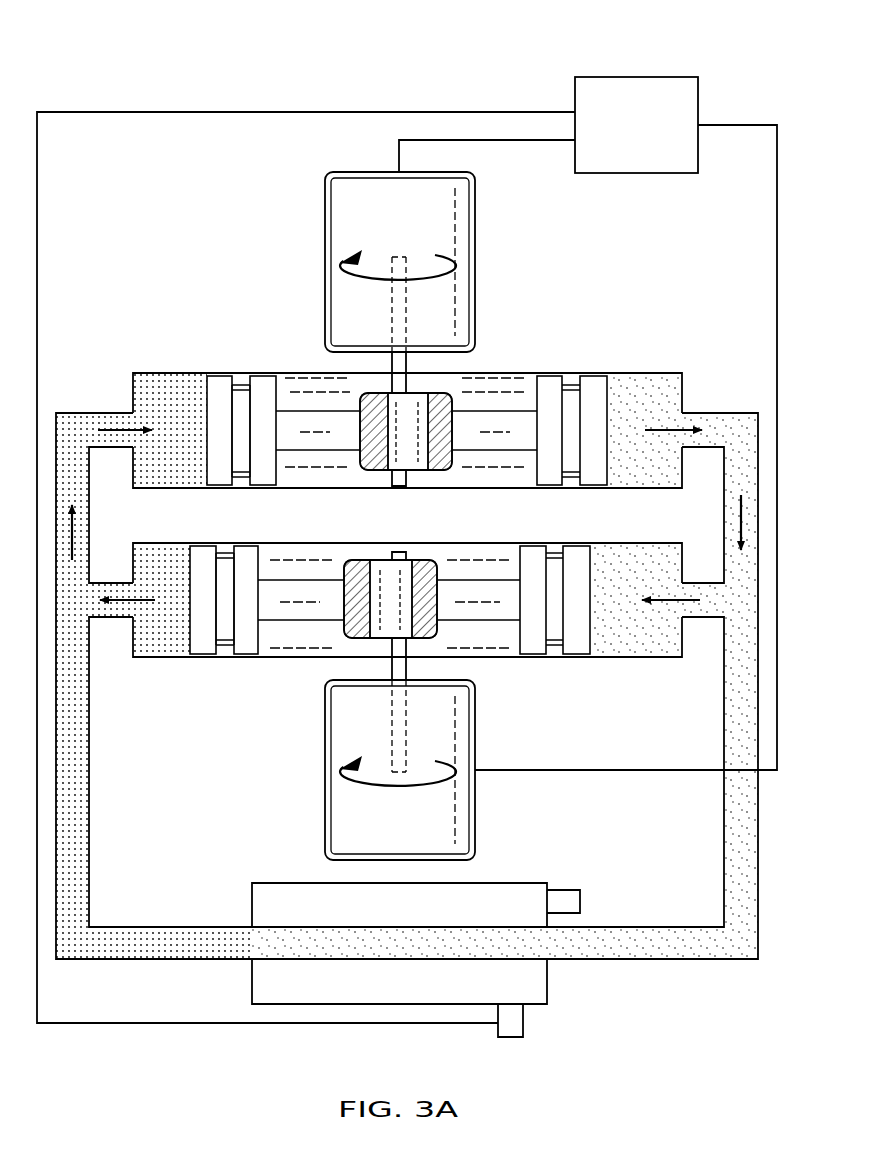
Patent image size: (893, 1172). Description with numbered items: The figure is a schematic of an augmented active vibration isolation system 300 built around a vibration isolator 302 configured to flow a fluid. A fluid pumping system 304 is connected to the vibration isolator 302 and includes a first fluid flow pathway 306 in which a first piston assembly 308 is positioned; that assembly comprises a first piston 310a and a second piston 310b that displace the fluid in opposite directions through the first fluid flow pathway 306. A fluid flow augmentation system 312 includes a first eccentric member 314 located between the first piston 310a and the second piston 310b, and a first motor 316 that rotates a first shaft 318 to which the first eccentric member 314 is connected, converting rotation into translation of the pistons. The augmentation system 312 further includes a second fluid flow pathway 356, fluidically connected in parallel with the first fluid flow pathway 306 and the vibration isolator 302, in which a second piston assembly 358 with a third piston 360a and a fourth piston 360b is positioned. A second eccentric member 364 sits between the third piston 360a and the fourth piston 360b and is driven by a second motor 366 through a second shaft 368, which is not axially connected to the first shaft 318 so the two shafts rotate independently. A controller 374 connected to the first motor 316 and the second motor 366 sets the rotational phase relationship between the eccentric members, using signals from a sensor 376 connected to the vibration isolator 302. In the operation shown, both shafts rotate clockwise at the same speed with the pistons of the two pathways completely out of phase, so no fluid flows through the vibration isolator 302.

The augmented active vibration isolation system 300 is at (148, 60).
The vibration isolator 302 is at (549, 981).
The fluid pumping system 304 is at (240, 212).
The first fluid flow pathway 306 is at (683, 386).
The first piston assembly 308 is at (490, 475).
The first piston 310a is at (522, 388).
The second piston 310b is at (290, 388).
The fluid flow augmentation system 312 is at (647, 340).
The first eccentric member 314 is at (412, 445).
The first motor 316 is at (477, 262).
The first shaft 318 is at (392, 362).
The second fluid flow pathway 356 is at (696, 652).
The second piston assembly 358 is at (310, 548).
The third piston 360a is at (505, 643).
The fourth piston 360b is at (275, 643).
The second eccentric member 364 is at (385, 583).
The second motor 366 is at (477, 810).
The second shaft 368 is at (392, 668).
The controller 374 is at (655, 140).
The sensor 376 is at (510, 1040).